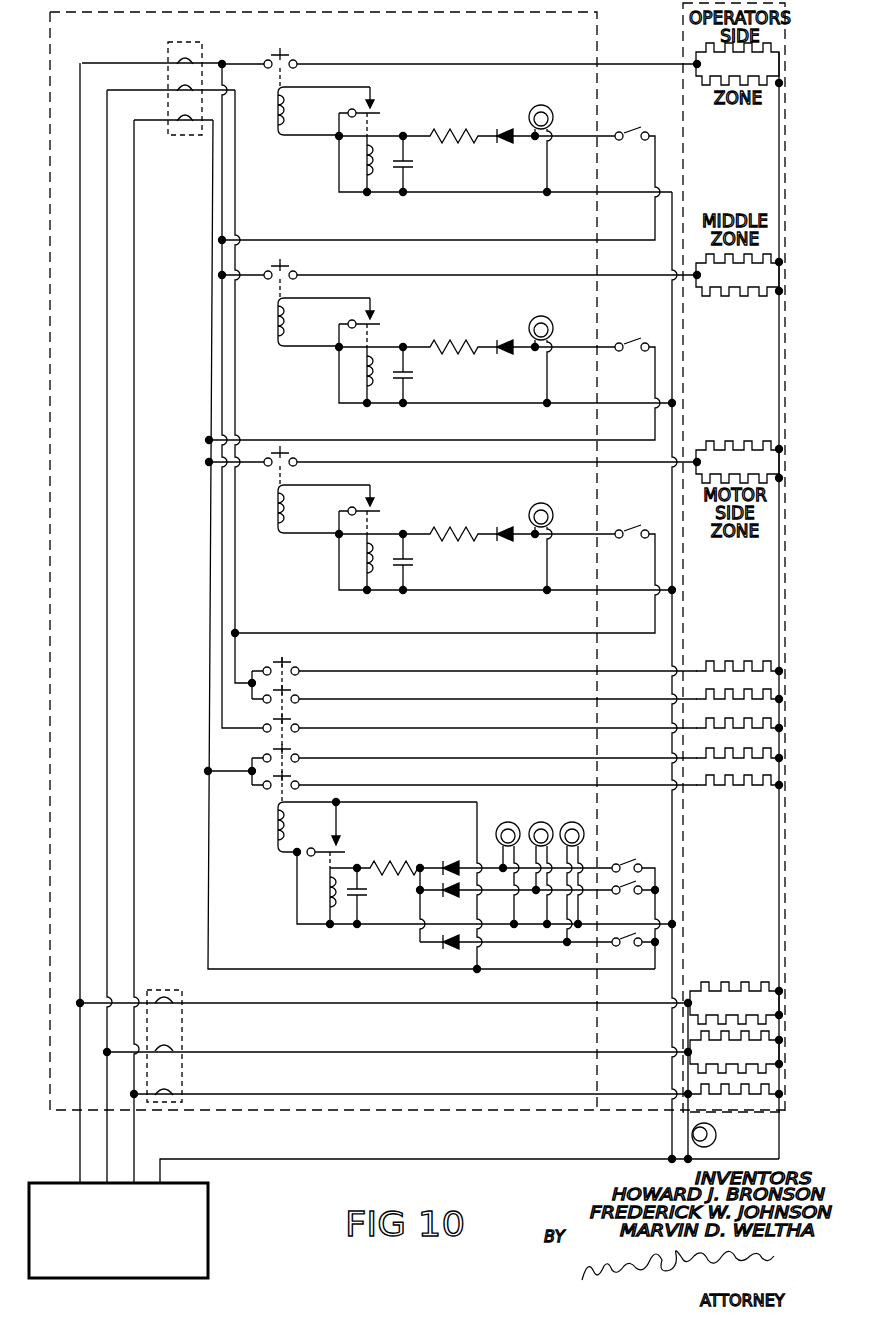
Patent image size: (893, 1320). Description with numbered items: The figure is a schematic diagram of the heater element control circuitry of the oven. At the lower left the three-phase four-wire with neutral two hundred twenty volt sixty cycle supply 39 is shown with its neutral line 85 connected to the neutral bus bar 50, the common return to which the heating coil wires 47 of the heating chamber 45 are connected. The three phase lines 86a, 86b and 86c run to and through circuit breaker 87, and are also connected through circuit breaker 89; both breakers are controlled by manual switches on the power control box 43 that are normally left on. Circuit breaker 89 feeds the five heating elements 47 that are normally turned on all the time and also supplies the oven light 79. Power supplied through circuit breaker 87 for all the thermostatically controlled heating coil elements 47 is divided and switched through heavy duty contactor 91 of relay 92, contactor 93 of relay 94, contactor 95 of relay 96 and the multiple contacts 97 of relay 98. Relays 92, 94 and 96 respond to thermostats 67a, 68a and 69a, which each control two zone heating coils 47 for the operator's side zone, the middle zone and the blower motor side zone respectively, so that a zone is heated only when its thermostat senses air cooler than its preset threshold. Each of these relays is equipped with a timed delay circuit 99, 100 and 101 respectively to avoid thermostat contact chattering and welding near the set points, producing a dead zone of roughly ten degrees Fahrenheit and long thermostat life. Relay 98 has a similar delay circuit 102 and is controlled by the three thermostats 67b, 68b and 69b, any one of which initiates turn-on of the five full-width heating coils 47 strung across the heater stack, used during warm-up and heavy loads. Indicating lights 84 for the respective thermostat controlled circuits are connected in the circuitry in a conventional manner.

The three-phase four-wire supply 39 is at (209, 1200).
The power control box 43 is at (597, 27).
The heating chamber 45 is at (683, 49).
The heating coil wires 47 is at (722, 55).
The neutral bus bar 50 is at (779, 348).
The thermostat 67a is at (645, 124).
The thermostat 67b is at (624, 860).
The thermostat 68a is at (645, 335).
The thermostat 68b is at (626, 893).
The thermostat 69a is at (645, 522).
The thermostat 69b is at (627, 946).
The oven light 79 is at (716, 1140).
The indicating lights 84 is at (550, 111).
The neutral line 85 is at (621, 1157).
The three phase power line 86a is at (80, 1130).
The three phase power line 86b is at (80, 1158).
The three phase power line 86c is at (134, 1133).
The circuit breaker 87 is at (205, 51).
The circuit breaker 89 is at (161, 989).
The heavy duty contactor 91 is at (283, 55).
The relay 92 is at (277, 130).
The heavy duty contactor 93 is at (283, 266).
The relay 94 is at (277, 341).
The heavy duty contactor 95 is at (283, 453).
The relay 96 is at (277, 528).
The multiple contacts 97 is at (285, 689).
The relay 98 is at (276, 830).
The timed delay circuit 99 is at (462, 131).
The timed delay circuit 100 is at (455, 330).
The timed delay circuit 101 is at (440, 516).
The delay circuit 102 is at (407, 855).